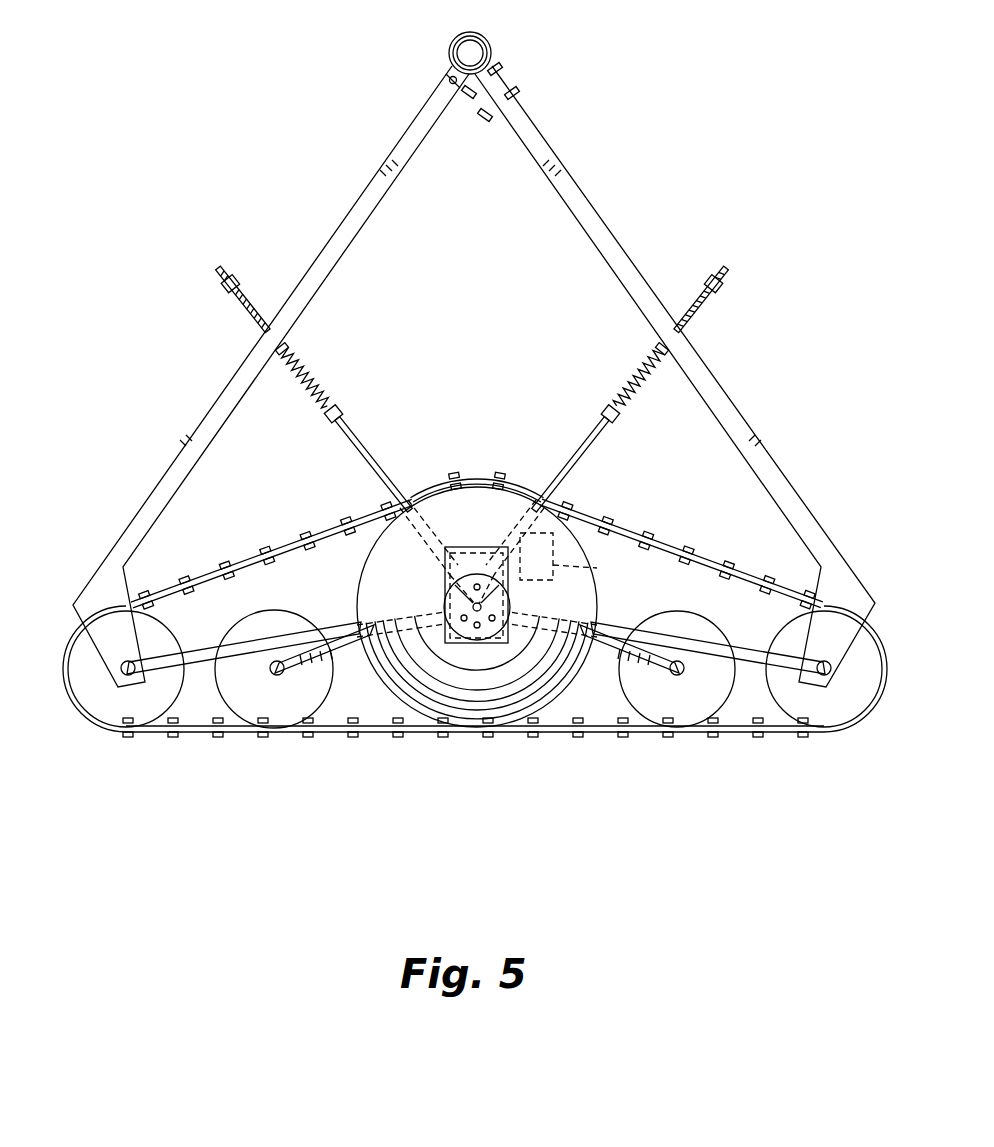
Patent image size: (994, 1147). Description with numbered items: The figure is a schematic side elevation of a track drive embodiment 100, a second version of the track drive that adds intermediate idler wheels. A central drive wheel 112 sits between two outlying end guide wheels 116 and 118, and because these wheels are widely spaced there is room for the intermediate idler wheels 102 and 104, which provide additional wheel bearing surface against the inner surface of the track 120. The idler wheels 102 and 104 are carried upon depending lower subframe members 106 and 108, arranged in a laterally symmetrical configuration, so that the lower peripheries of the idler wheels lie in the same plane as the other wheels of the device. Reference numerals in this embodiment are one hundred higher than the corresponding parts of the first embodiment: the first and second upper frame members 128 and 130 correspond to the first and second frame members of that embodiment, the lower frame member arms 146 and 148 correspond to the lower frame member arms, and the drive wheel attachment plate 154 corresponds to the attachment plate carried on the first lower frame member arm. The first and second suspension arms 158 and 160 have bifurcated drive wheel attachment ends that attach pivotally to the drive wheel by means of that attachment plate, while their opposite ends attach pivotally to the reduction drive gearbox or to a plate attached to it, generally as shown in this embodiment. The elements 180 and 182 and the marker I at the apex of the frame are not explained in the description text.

The pivot ring I is at (491, 52).
The track drive embodiment 100 is at (668, 830).
The intermediate idler wheel 102 is at (290, 710).
The intermediate idler wheel 104 is at (670, 700).
The depending lower subframe member 106 is at (223, 702).
The depending lower subframe member 108 is at (757, 690).
The central drive wheel 112 is at (475, 715).
The outlying end guide wheel 116 is at (105, 710).
The outlying end guide wheel 118 is at (847, 703).
The track belt 120 is at (580, 733).
The first upper frame member 128 is at (380, 180).
The second upper frame member 130 is at (570, 180).
The first lower frame member arm 146 is at (196, 652).
The second lower frame member arm 148 is at (745, 655).
The drive wheel attachment plate 154 is at (478, 547).
The first suspension arm 158 is at (370, 455).
The second suspension arm 160 is at (580, 455).
The hidden mount 180 is at (598, 568).
The hidden mount 182 is at (440, 580).